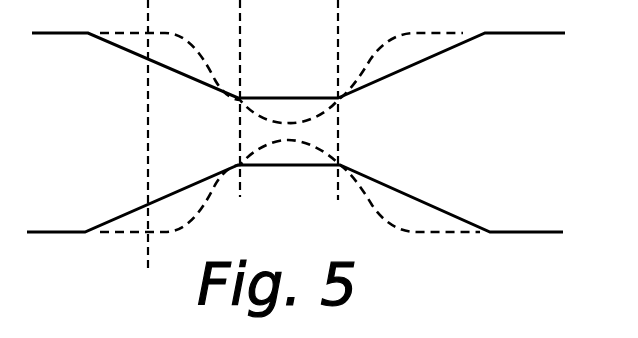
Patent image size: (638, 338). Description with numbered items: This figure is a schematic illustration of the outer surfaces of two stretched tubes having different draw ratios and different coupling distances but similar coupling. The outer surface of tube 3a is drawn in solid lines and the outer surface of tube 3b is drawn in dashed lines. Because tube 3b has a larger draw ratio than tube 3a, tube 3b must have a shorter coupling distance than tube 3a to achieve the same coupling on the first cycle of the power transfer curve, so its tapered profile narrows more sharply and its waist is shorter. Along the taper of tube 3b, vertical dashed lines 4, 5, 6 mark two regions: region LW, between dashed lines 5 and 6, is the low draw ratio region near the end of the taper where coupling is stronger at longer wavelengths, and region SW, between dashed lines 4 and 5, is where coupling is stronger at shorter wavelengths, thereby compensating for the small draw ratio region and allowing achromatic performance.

The stretched tube 3a is at (408, 69).
The stretched tube 3b is at (410, 34).
The dashed line 4 is at (338, 19).
The dashed line 5 is at (240, 19).
The dashed line 6 is at (148, 9).
The long wavelength region LW is at (191, 20).
The short wavelength region SW is at (283, 71).